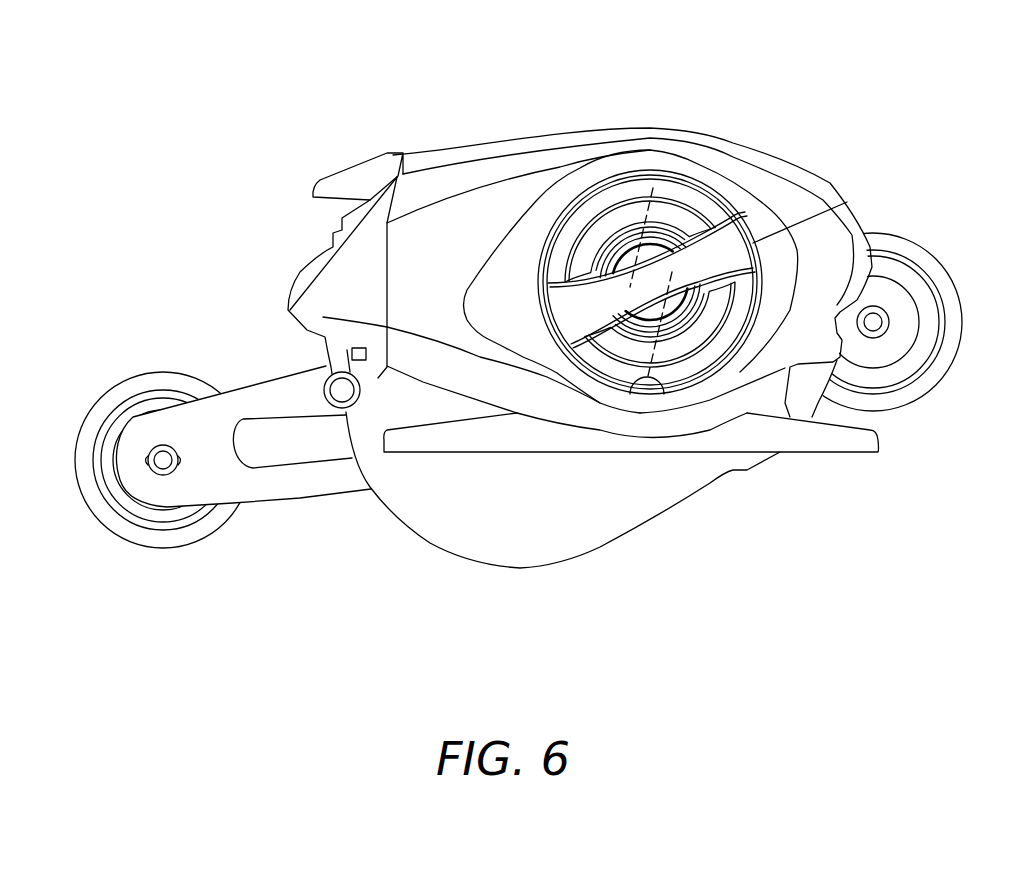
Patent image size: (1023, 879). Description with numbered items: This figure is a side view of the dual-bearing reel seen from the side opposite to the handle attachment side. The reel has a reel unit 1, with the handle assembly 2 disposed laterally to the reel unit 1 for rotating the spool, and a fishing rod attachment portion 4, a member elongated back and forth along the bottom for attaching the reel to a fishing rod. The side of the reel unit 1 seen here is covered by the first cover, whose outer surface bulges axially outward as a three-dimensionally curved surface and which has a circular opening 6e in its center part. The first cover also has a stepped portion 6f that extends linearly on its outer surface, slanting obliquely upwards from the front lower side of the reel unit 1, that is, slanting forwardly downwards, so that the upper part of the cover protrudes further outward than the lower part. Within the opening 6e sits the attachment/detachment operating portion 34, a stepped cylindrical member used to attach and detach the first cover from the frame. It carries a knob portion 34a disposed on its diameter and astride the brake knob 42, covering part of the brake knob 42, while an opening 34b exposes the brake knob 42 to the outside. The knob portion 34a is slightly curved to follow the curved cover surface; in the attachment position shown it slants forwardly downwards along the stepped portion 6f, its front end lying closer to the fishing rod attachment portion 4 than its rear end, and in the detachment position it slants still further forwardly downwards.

The reel unit 1 is at (418, 140).
The handle assembly 2 is at (255, 387).
The fishing rod attachment portion 4 is at (827, 440).
The opening 6e is at (655, 388).
The stepped portion 6f is at (545, 324).
The attachment/detachment operating portion 34 is at (681, 172).
The knob portion 34a is at (725, 245).
The opening 34b is at (632, 235).
The brake knob 42 is at (726, 352).